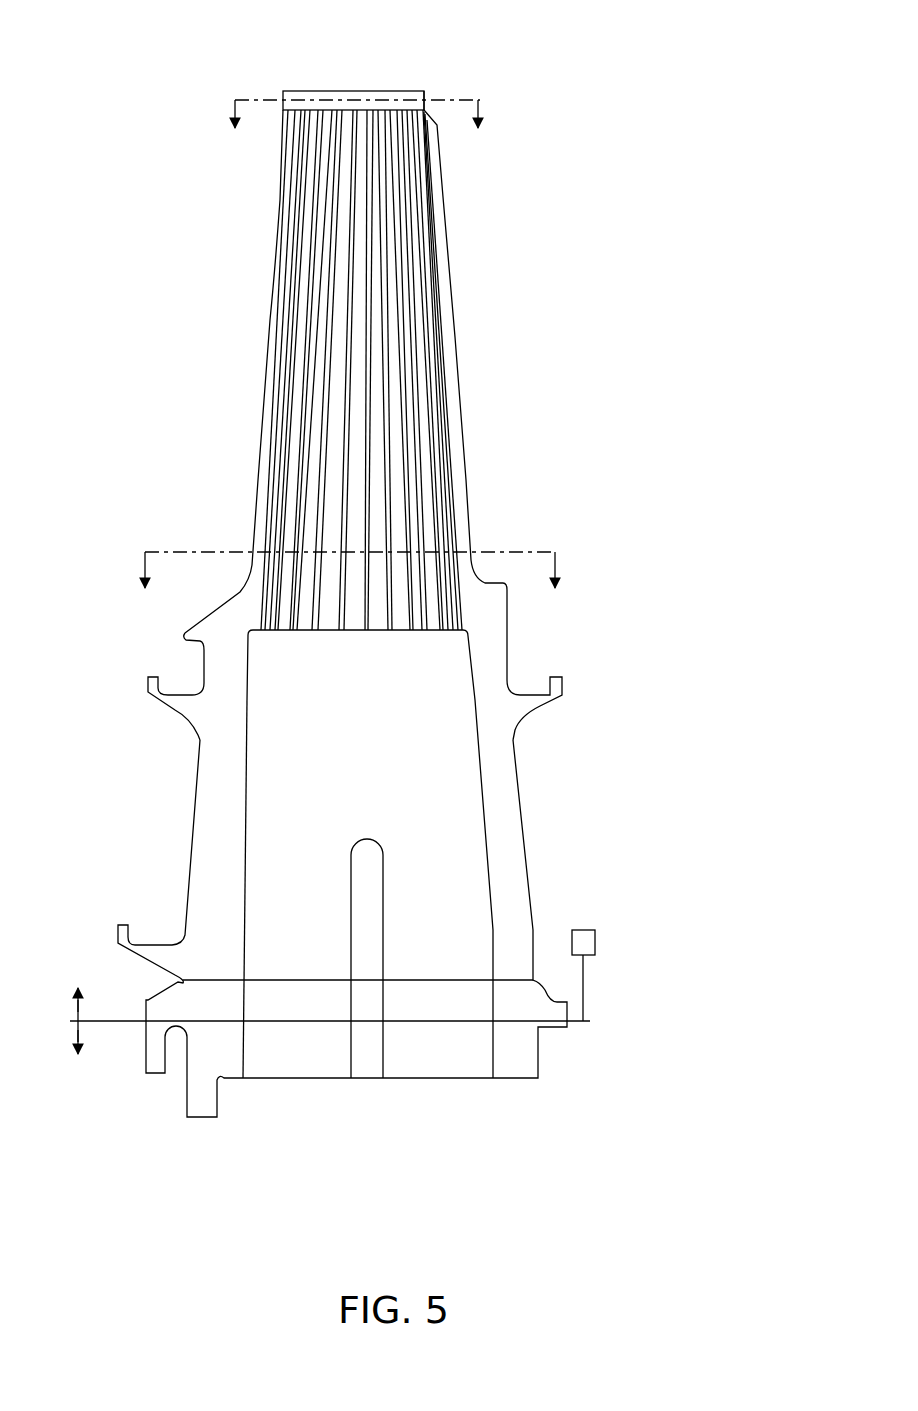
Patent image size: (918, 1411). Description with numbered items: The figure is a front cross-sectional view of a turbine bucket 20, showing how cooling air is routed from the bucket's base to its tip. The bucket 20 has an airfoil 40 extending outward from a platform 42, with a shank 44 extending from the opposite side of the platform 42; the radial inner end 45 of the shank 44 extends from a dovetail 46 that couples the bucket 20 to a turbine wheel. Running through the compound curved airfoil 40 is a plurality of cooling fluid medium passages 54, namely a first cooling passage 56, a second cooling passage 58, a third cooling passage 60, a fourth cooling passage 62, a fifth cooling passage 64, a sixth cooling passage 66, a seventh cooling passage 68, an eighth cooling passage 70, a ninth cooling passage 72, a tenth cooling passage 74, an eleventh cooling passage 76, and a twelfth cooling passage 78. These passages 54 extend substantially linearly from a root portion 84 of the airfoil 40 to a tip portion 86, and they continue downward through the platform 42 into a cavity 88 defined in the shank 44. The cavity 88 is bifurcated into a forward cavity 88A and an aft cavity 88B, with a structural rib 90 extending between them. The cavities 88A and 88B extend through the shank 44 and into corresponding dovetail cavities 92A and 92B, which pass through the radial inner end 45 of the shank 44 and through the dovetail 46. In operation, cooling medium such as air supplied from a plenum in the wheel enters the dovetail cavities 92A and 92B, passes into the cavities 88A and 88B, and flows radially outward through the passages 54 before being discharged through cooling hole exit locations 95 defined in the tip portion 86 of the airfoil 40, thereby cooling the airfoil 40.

The turbine bucket 20 is at (706, 152).
The airfoil 40 is at (272, 208).
The platform 42 is at (227, 592).
The shank 44 is at (232, 663).
The radial inner end 45 is at (638, 947).
The dovetail 46 is at (518, 1052).
The cooling fluid medium passages 54 is at (420, 80).
The first cooling passage 56 is at (295, 136).
The second cooling passage 58 is at (307, 171).
The third cooling passage 60 is at (318, 208).
The fourth cooling passage 62 is at (333, 248).
The fifth cooling passage 64 is at (352, 286).
The sixth cooling passage 66 is at (370, 326).
The seventh cooling passage 68 is at (388, 360).
The eighth cooling passage 70 is at (405, 393).
The ninth cooling passage 72 is at (420, 425).
The tenth cooling passage 74 is at (433, 455).
The eleventh cooling passage 76 is at (445, 472).
The twelfth cooling passage 78 is at (455, 497).
The root portion 84 is at (470, 525).
The tip portion 86 is at (427, 92).
The cavity 88 is at (243, 805).
The forward cavity 88A is at (268, 890).
The aft cavity 88B is at (457, 893).
The structural rib 90 is at (383, 855).
The dovetail cavity 92A is at (288, 1057).
The dovetail cavity 92B is at (440, 1050).
The cooling hole exit locations 95 is at (314, 84).